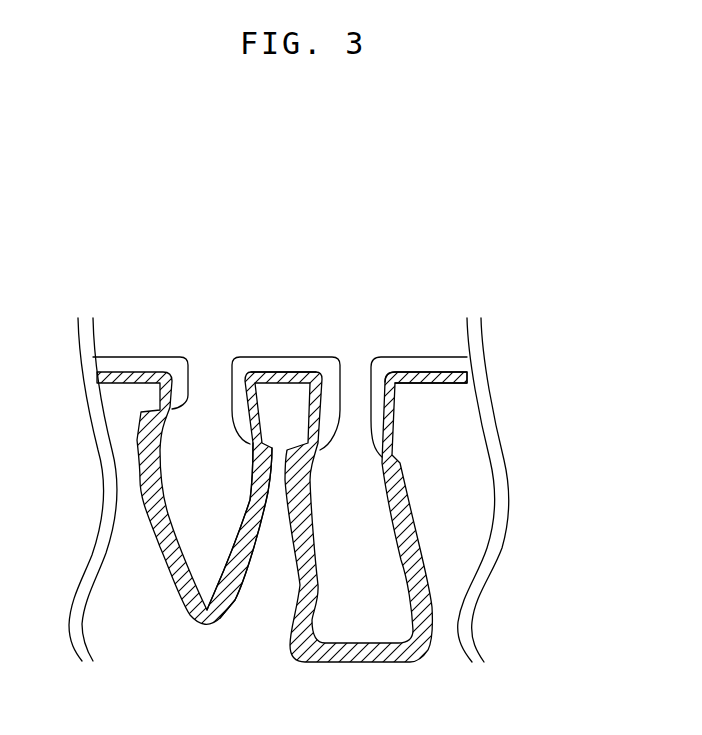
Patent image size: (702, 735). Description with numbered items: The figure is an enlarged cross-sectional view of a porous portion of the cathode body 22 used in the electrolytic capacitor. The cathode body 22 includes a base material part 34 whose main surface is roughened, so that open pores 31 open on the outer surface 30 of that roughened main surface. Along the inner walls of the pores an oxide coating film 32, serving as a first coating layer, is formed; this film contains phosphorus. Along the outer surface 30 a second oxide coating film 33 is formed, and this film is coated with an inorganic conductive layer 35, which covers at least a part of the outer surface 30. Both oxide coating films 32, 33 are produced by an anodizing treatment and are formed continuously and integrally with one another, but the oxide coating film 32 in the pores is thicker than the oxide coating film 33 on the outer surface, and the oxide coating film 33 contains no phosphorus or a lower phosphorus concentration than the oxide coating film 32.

The cathode body 22 is at (504, 307).
The outer surface 30 is at (283, 373).
The open pores 31 is at (338, 509).
The oxide coating film 32 is at (250, 498).
The oxide coating film 33 is at (283, 373).
The base material part 34 is at (442, 400).
The inorganic conductive layer 35 is at (315, 364).